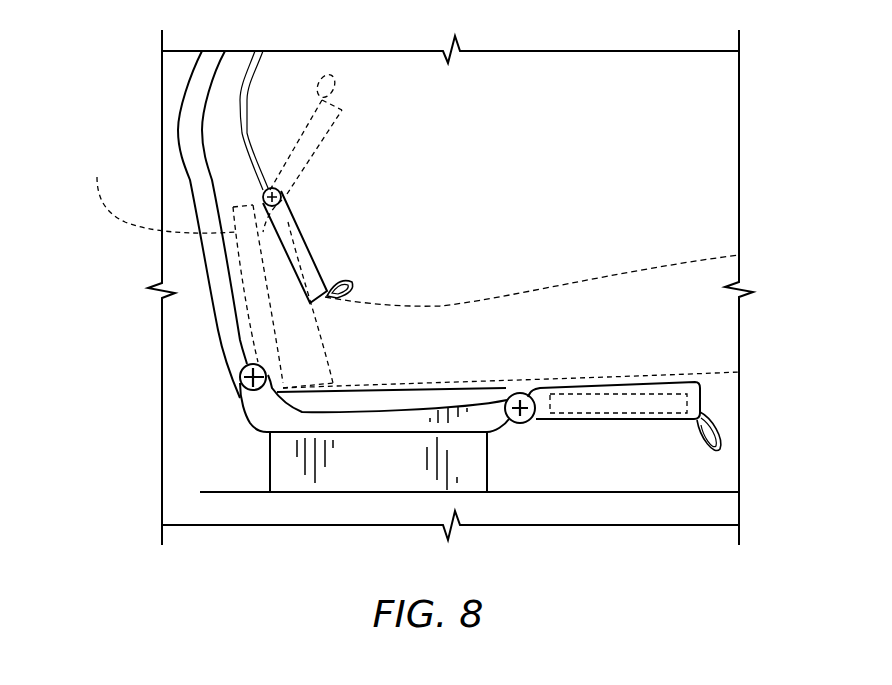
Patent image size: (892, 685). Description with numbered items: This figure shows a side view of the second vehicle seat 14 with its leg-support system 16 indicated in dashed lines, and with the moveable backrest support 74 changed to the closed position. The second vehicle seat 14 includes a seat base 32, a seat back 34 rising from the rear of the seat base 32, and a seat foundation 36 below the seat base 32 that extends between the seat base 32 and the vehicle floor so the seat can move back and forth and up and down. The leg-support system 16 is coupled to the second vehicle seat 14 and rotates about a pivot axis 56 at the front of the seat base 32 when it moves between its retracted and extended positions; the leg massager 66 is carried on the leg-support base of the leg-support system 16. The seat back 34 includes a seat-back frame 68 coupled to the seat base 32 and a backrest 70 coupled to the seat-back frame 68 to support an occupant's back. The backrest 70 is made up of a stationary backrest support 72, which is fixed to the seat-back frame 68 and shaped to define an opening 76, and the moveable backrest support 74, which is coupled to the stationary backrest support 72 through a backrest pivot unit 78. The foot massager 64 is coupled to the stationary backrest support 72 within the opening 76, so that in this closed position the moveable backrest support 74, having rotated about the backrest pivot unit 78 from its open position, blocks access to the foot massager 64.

The second vehicle seat 14 is at (558, 125).
The leg-support system 16 is at (661, 290).
The seat base 32 is at (246, 420).
The seat back 34 is at (163, 219).
The seat foundation 36 is at (268, 465).
The pivot axis 56 is at (613, 358).
The foot massager 64 is at (409, 268).
The leg massager 66 is at (647, 422).
The seat-back frame 68 is at (177, 144).
The backrest 70 is at (340, 185).
The stationary backrest support 72 is at (258, 121).
The moveable backrest support 74 is at (317, 263).
The opening 76 is at (284, 142).
The backrest pivot unit 78 is at (286, 182).